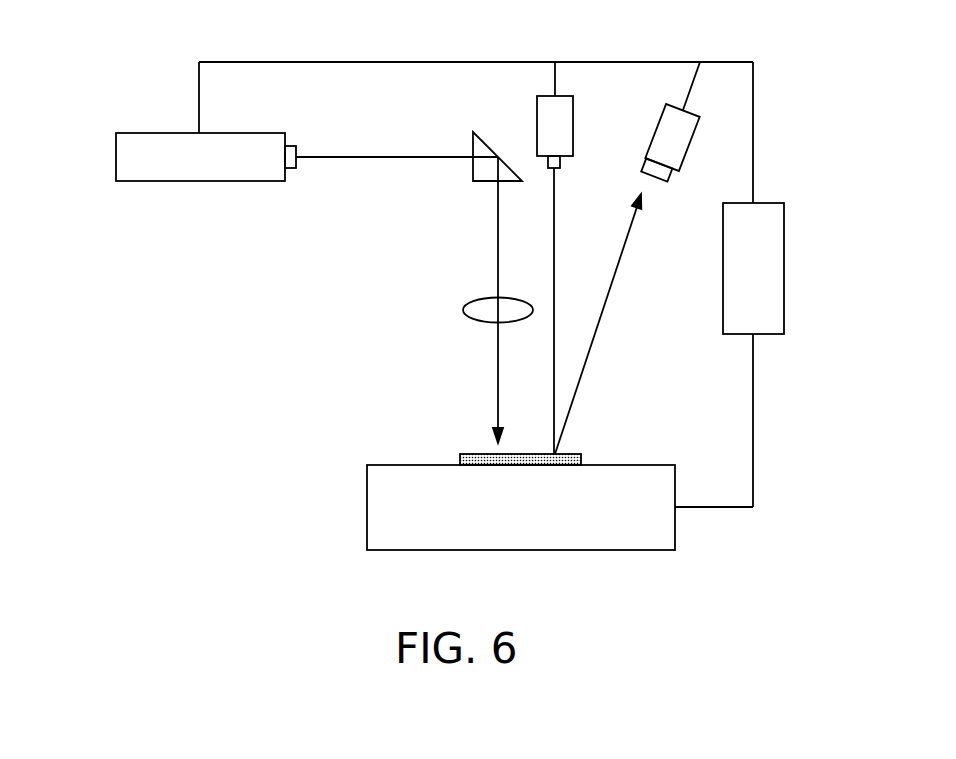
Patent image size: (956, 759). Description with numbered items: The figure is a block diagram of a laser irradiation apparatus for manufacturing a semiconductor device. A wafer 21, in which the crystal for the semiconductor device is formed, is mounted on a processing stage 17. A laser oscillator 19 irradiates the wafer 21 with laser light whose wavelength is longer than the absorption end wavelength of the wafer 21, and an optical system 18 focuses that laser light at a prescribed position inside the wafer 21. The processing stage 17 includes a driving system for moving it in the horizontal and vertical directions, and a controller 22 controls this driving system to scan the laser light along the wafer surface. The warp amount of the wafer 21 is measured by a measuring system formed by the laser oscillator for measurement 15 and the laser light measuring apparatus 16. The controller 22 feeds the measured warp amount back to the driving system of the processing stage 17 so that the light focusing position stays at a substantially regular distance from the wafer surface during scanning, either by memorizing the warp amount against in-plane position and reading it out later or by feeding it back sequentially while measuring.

The laser oscillator for measurement 15 is at (555, 127).
The laser light measuring apparatus 16 is at (673, 137).
The processing stage 17 is at (400, 509).
The optical system 18 is at (482, 311).
The laser oscillator 19 is at (145, 157).
The wafer 21 is at (468, 456).
The controller 22 is at (752, 272).